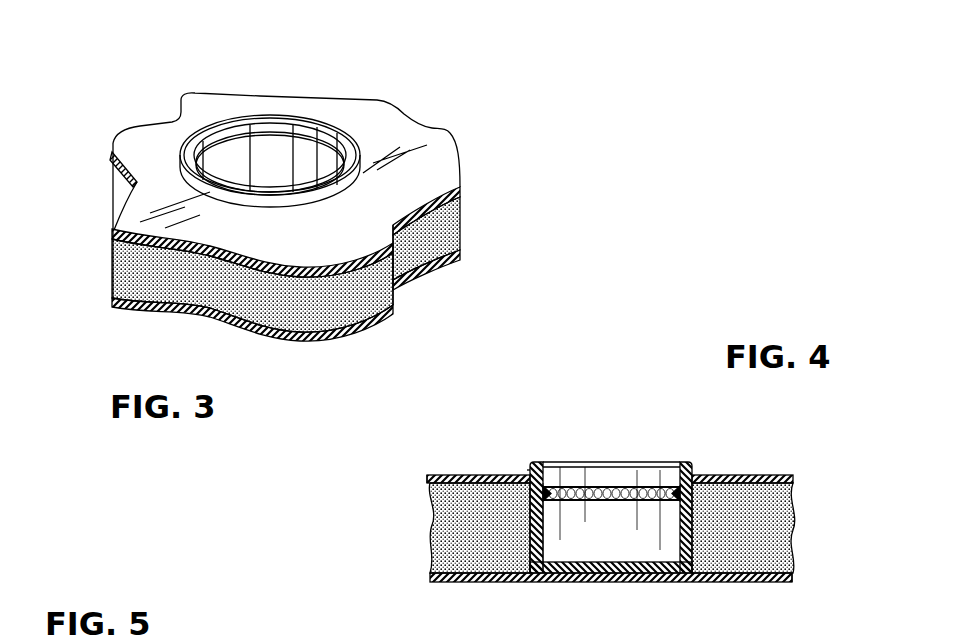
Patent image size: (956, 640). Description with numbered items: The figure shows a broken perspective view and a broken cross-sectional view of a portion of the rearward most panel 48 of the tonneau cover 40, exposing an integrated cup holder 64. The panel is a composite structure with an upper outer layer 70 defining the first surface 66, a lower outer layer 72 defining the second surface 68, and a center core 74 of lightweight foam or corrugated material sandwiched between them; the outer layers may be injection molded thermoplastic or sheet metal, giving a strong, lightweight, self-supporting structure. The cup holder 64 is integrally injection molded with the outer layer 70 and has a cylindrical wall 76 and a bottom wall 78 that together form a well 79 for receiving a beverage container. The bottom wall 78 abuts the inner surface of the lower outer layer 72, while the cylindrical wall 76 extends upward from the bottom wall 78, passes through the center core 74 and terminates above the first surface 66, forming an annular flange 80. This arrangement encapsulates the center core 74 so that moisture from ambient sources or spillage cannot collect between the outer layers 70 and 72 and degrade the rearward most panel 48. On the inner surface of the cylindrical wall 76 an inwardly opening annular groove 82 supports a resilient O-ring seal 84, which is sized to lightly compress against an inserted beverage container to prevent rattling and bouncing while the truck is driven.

In FIG. 3, the tonneau cover 40 is at (112, 112).
In FIG. 4, the tonneau cover 40 is at (434, 452).
In FIG. 3, the rearward most panel 48 is at (434, 152).
In FIG. 4, the rearward most panel 48 is at (466, 474).
In FIG. 3, the cup holder 64 is at (290, 108).
In FIG. 4, the cup holder 64 is at (588, 454).
In FIG. 3, the first surface 66 is at (164, 150).
In FIG. 4, the first surface 66 is at (428, 470).
In FIG. 3, the second surface 68 is at (396, 306).
In FIG. 4, the second surface 68 is at (427, 580).
In FIG. 3, the outer layer 70 is at (457, 184).
In FIG. 4, the outer layer 70 is at (745, 476).
In FIG. 3, the outer layer 72 is at (457, 252).
In FIG. 4, the outer layer 72 is at (748, 584).
In FIG. 3, the center core 74 is at (112, 258).
In FIG. 4, the center core 74 is at (770, 525).
In FIG. 3, the cylindrical wall 76 is at (218, 135).
In FIG. 4, the cylindrical wall 76 is at (530, 524).
In FIG. 4, the bottom wall 78 is at (590, 576).
In FIG. 4, the well 79 is at (610, 508).
In FIG. 3, the annular flange 80 is at (200, 180).
In FIG. 4, the annular flange 80 is at (526, 467).
In FIG. 3, the annular groove 82 is at (312, 150).
In FIG. 4, the annular groove 82 is at (636, 494).
In FIG. 3, the O-ring seal 84 is at (252, 140).
In FIG. 4, the O-ring seal 84 is at (676, 497).